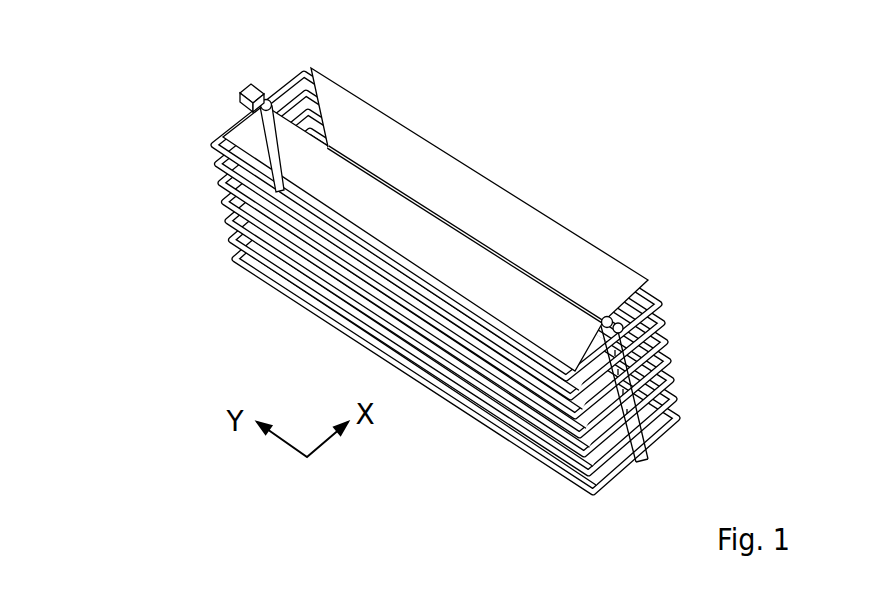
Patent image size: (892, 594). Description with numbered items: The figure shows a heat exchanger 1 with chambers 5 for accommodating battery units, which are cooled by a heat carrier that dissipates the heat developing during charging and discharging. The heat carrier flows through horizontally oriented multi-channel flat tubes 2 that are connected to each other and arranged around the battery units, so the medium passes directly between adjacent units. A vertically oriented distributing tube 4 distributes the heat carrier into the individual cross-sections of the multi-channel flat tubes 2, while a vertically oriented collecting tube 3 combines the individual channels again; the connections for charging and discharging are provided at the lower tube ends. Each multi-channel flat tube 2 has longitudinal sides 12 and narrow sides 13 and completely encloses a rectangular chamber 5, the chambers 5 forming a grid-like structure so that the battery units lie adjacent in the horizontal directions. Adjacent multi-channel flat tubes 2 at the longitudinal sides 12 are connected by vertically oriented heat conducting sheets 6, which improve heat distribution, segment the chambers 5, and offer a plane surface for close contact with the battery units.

The heat exchanger 1 is at (422, 272).
The multi-channel flat tubes 2 is at (422, 283).
The collecting tube 3 is at (247, 91).
The distributing tube 4 is at (638, 422).
The chambers 5 is at (489, 219).
The heat conducting sheets 6 is at (608, 263).
The longitudinal sides 12 is at (323, 283).
The narrow sides 13 is at (232, 136).